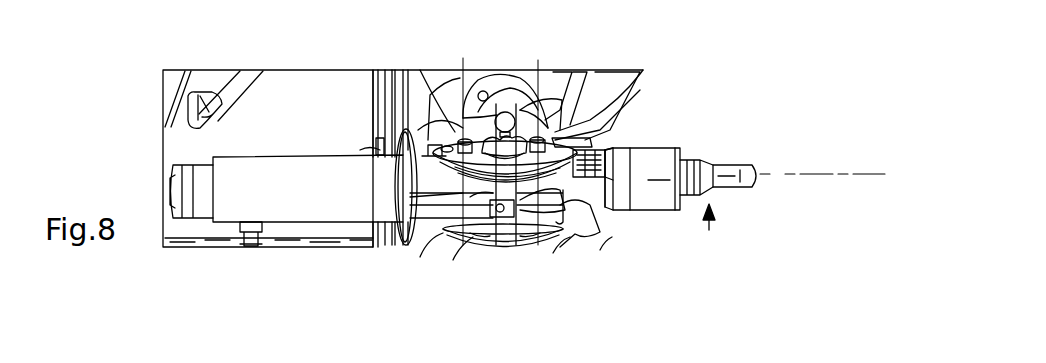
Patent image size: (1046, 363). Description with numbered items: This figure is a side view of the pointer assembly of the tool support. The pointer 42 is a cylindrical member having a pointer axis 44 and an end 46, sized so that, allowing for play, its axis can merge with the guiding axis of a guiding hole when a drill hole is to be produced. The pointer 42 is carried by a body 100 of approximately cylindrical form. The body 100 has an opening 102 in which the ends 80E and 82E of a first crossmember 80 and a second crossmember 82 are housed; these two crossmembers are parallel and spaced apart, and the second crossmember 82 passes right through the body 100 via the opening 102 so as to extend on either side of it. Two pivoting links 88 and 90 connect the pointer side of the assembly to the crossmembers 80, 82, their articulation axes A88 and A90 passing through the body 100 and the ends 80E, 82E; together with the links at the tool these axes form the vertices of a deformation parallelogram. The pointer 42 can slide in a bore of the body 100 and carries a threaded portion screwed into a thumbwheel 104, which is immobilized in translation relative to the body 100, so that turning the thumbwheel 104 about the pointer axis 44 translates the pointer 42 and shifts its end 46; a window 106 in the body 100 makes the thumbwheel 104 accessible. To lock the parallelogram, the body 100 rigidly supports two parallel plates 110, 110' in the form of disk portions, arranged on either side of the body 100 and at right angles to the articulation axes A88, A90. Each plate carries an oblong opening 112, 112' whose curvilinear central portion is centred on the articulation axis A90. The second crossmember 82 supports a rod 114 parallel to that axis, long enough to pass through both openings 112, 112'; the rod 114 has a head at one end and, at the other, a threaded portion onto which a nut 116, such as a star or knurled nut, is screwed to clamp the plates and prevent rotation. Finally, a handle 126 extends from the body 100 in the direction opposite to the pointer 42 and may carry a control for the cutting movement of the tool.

The pointer 42 is at (712, 228).
The pointer axis 44 is at (803, 173).
The end of the pointer 46 is at (765, 173).
The first crossmember 80 is at (490, 82).
The end of the first crossmember 80E is at (385, 245).
The second crossmember 82 is at (622, 120).
The end of the second crossmember 82E is at (530, 245).
The pivoting link 88 is at (460, 134).
The articulation axis A88 is at (460, 243).
The pivoting link 90 is at (550, 90).
The articulation axis A90 is at (542, 132).
The body 100 is at (403, 122).
The opening 102 is at (590, 246).
The thumbwheel 104 is at (611, 147).
The window 106 is at (709, 201).
The plate 110 is at (476, 128).
The plate 110' is at (541, 270).
The oblong opening 112 is at (536, 91).
The oblong opening 112' is at (511, 255).
The rod 114 is at (421, 243).
The nut 116 is at (501, 100).
The handle 126 is at (217, 160).